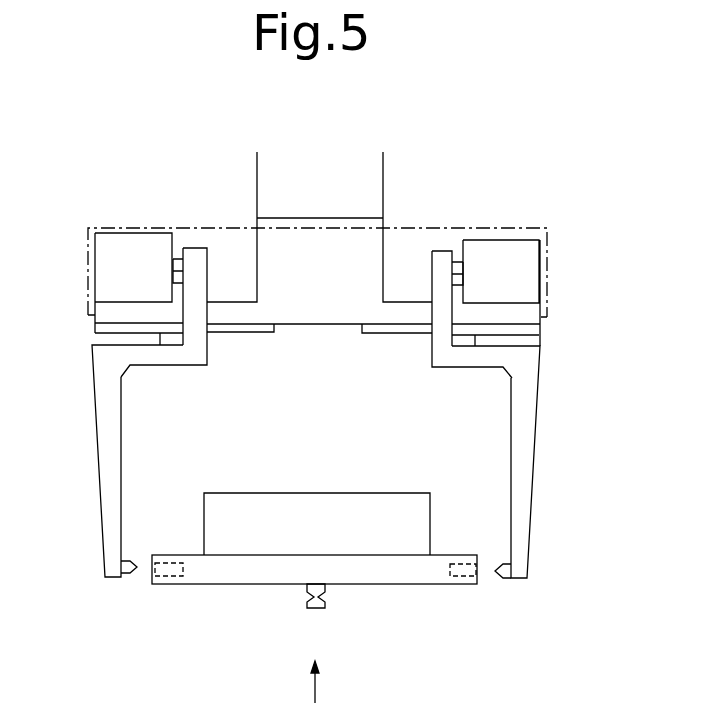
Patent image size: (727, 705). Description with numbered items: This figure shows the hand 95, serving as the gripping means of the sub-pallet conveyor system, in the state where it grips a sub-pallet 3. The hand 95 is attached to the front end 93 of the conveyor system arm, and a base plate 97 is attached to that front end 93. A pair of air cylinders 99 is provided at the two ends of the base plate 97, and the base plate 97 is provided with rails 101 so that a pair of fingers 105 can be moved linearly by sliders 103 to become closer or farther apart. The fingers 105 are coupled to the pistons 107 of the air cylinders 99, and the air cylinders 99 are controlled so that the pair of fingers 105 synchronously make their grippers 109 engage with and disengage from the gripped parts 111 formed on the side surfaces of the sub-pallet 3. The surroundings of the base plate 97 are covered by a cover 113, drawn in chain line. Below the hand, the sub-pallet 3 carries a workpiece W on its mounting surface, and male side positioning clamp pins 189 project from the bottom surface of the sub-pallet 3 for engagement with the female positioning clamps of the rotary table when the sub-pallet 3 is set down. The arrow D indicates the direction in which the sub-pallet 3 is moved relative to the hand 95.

The sub-pallet 3 is at (380, 577).
The workpiece W is at (352, 518).
The front end 93 is at (272, 177).
The hand 95 is at (578, 203).
The base plate 97 is at (397, 312).
The air cylinders 99 is at (125, 250).
The rails 101 is at (540, 340).
The sliders 103 is at (467, 343).
The fingers 105 is at (103, 458).
The pistons 107 is at (177, 265).
The grippers 109 is at (503, 573).
The gripped parts 111 is at (480, 568).
The cover 113 is at (230, 227).
The male side positioning clamp pins 189 is at (303, 605).
The direction D is at (326, 683).